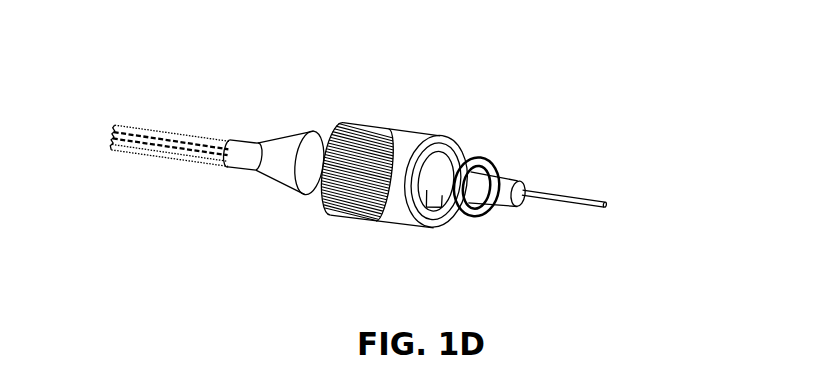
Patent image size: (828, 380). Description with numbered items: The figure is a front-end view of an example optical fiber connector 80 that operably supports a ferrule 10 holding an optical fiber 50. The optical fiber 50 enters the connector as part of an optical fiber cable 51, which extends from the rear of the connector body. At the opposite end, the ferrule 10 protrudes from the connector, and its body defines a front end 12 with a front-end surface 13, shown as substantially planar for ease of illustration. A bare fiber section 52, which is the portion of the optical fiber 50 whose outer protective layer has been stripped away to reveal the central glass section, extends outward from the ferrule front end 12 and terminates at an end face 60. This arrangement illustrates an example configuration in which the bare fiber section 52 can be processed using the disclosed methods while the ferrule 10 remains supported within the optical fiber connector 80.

The ferrule 10 is at (517, 192).
The front end 12 is at (545, 227).
The front-end surface 13 is at (517, 201).
The optical fiber 50 is at (156, 143).
The optical fiber cable 51 is at (141, 150).
The bare fiber section 52 is at (590, 176).
The end face 60 is at (607, 207).
The optical fiber connector 80 is at (438, 103).